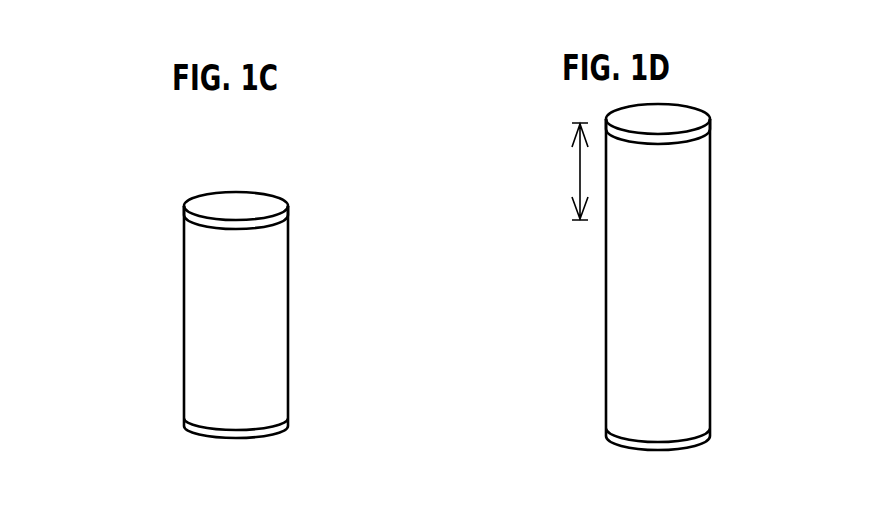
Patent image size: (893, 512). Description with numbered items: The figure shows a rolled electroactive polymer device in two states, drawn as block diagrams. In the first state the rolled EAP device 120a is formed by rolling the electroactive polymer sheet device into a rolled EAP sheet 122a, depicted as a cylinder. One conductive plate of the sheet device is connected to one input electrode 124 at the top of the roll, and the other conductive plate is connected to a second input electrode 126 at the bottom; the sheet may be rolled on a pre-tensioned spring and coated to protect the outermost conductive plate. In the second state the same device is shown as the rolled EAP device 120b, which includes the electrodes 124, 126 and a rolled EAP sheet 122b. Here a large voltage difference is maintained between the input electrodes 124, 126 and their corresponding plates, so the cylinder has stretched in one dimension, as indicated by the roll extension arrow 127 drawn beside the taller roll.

In FIG. 1C, the rolled EAP device 120a is at (225, 304).
In FIG. 1D, the rolled EAP device 120b is at (627, 273).
In FIG. 1C, the rolled EAP sheet 122a is at (242, 268).
In FIG. 1D, the rolled EAP sheet 122b is at (643, 347).
In FIG. 1C, the input electrode 124 is at (223, 208).
In FIG. 1D, the input electrode 124 is at (660, 128).
In FIG. 1C, the second input electrode 126 is at (165, 396).
In FIG. 1D, the second input electrode 126 is at (695, 449).
In FIG. 1D, the roll extension arrow 127 is at (573, 166).